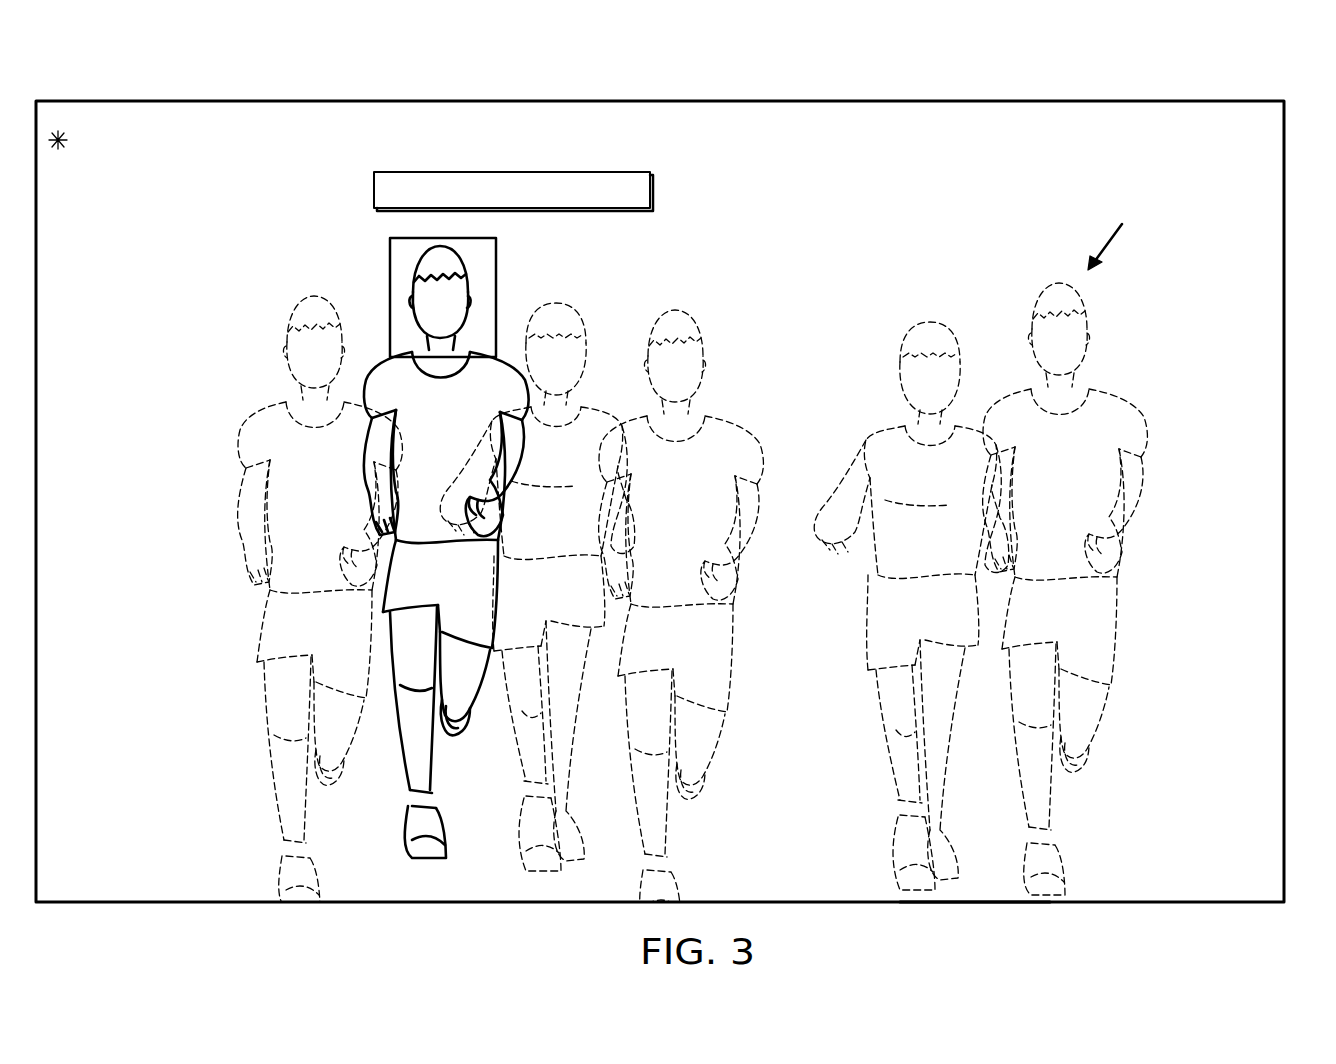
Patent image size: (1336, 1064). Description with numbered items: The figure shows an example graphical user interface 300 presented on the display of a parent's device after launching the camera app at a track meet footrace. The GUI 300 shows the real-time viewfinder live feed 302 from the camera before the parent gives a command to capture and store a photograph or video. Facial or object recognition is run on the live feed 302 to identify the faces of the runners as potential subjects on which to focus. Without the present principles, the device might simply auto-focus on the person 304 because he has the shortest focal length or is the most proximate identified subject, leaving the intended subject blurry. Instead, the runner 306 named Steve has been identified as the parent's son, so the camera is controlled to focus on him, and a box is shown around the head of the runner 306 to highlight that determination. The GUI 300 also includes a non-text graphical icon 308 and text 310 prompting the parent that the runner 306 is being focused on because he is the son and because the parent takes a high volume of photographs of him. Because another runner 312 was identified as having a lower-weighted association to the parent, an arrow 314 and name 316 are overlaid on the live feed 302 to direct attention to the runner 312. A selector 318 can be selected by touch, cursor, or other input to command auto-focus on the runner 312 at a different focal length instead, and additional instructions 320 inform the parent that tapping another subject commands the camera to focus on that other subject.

The graphical user interface 300 is at (1260, 101).
The live feed 302 is at (961, 876).
The person 304 is at (678, 320).
The runner 306 is at (378, 355).
The non-text graphical icon 308 is at (58, 125).
The text 310 is at (172, 130).
The runner 312 is at (1032, 312).
The arrow 314 is at (1092, 268).
The name 316 is at (1150, 196).
The selector 318 is at (374, 190).
The additional instructions 320 is at (856, 192).